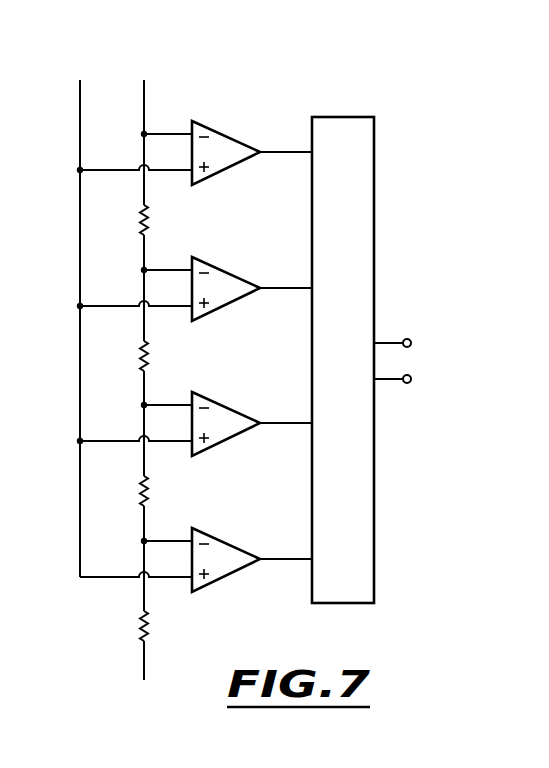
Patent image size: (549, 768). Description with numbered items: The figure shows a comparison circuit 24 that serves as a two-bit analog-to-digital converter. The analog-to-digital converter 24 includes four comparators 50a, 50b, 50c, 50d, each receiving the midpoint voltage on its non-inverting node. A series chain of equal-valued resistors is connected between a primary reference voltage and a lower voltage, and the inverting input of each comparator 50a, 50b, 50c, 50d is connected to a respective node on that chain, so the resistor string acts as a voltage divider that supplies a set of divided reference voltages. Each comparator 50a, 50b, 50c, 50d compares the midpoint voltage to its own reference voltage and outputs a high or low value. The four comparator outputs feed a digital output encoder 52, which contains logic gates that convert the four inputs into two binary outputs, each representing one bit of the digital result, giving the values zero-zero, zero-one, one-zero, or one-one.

The comparison circuit 24 is at (334, 66).
The comparator 50a is at (230, 142).
The comparator 50b is at (230, 278).
The comparator 50c is at (230, 413).
The comparator 50d is at (230, 549).
The digital output encoder 52 is at (365, 146).